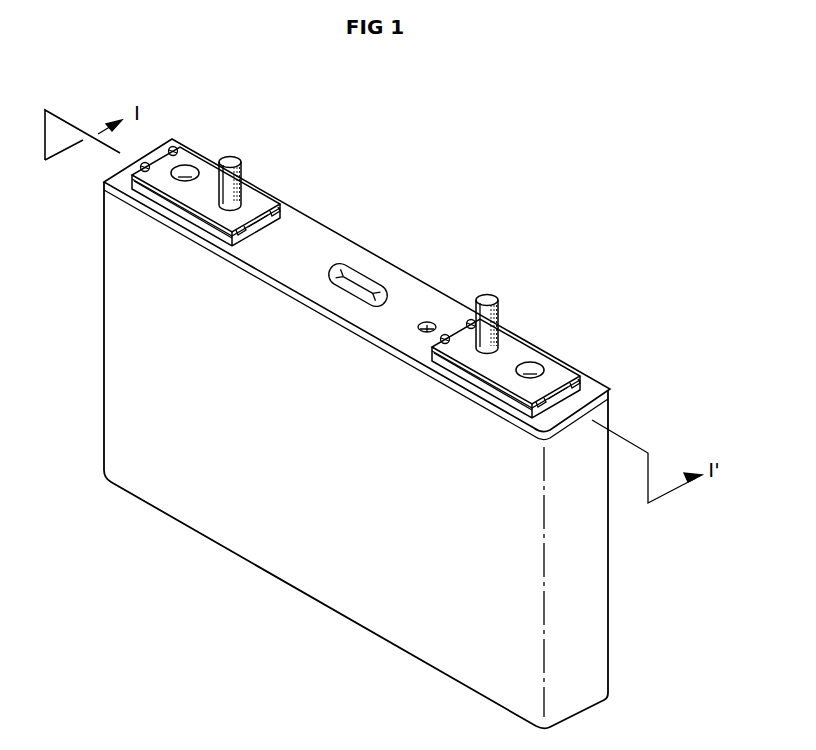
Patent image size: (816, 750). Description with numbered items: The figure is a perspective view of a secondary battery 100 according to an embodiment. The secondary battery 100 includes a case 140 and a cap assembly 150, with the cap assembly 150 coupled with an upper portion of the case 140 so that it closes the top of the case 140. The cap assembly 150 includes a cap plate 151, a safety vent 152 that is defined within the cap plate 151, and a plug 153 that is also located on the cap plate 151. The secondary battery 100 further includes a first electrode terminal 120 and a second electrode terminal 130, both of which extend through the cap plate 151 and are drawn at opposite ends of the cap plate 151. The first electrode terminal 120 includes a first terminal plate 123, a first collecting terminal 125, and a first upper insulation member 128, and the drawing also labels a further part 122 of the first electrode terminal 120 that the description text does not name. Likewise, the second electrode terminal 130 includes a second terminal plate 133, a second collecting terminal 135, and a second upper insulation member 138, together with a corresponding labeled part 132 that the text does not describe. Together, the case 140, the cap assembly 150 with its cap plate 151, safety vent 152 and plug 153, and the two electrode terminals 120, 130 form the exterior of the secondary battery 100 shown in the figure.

The secondary battery 100 is at (567, 108).
The first electrode terminal 120 is at (245, 136).
The first terminal pin 122 is at (244, 175).
The first terminal plate 123 is at (207, 177).
The first collecting terminal 125 is at (186, 170).
The first upper insulation member 128 is at (158, 146).
The second electrode terminal 130 is at (532, 303).
The second terminal pin 132 is at (496, 322).
The second terminal plate 133 is at (557, 368).
The second collecting terminal 135 is at (533, 363).
The second upper insulation member 138 is at (575, 371).
The case 140 is at (303, 578).
The cap assembly 150 is at (430, 228).
The cap plate 151 is at (313, 240).
The safety vent 152 is at (355, 272).
The plug 153 is at (429, 322).